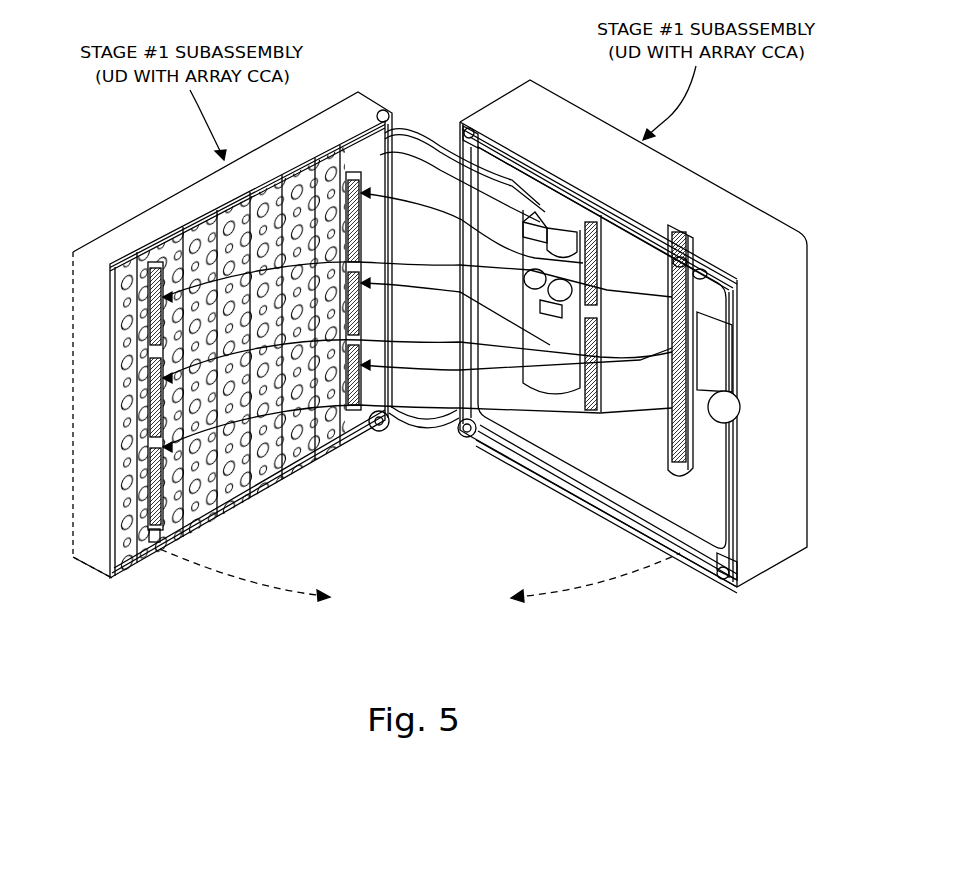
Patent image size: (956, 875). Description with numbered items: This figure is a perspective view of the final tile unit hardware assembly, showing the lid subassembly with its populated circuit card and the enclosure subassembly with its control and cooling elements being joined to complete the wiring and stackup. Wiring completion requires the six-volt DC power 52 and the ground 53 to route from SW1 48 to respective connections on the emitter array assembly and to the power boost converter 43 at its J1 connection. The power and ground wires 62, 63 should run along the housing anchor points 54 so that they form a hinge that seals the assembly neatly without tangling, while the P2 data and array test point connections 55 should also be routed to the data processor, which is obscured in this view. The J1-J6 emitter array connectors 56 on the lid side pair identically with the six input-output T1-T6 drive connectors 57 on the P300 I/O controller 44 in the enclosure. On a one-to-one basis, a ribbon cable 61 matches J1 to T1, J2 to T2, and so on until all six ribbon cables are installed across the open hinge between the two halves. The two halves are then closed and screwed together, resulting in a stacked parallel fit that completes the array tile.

The power boost converter 43 is at (535, 220).
The Input/Output (I/O) controller 44 is at (530, 472).
The SW1 48 is at (736, 421).
The +6 VDC power 52 is at (153, 253).
The ground 53 is at (158, 560).
The anchor points 54 is at (665, 540).
The P2 data and array test point connections 55 is at (420, 160).
The J1-J6 emitter array connectors 56 is at (150, 348).
The T1-T6 drive connectors 57 is at (683, 250).
The ribbon cable 61 is at (440, 263).
The power wire 62 is at (405, 130).
The ground wire 63 is at (422, 432).